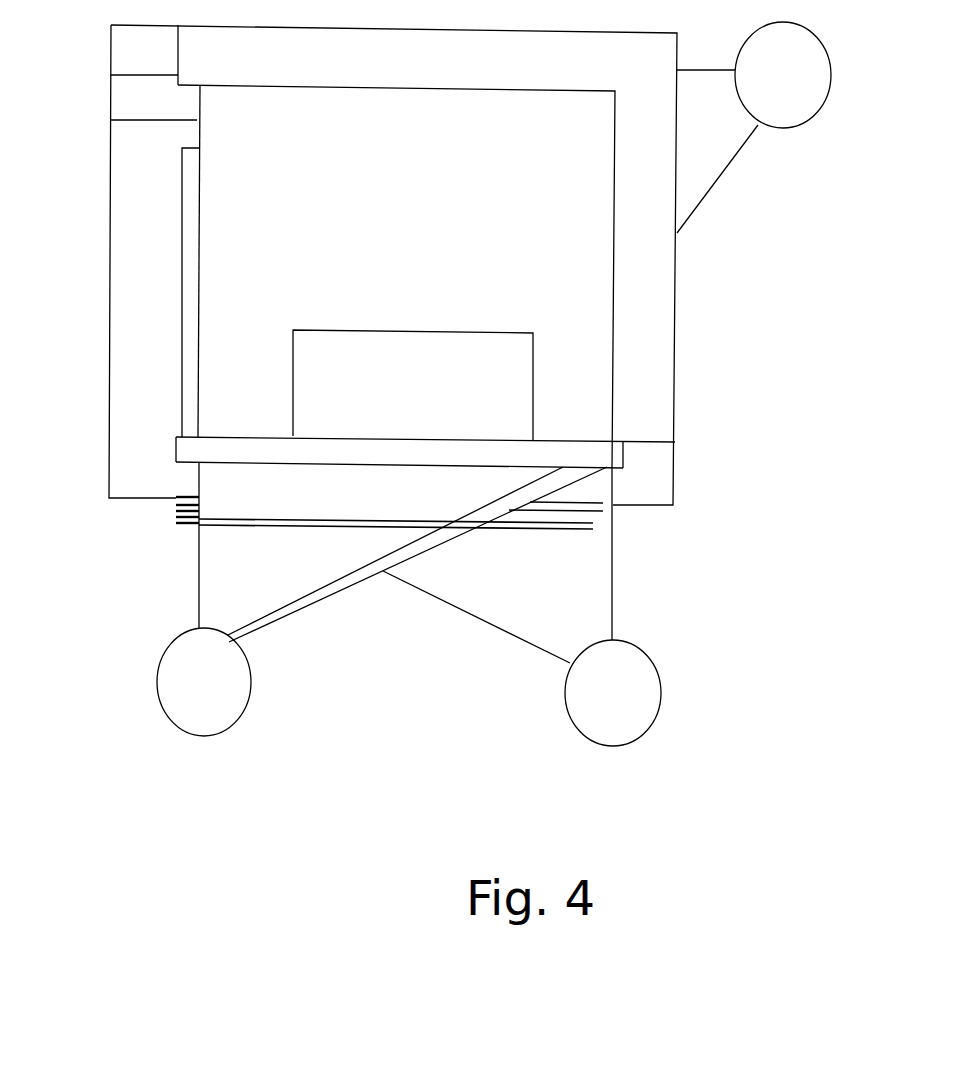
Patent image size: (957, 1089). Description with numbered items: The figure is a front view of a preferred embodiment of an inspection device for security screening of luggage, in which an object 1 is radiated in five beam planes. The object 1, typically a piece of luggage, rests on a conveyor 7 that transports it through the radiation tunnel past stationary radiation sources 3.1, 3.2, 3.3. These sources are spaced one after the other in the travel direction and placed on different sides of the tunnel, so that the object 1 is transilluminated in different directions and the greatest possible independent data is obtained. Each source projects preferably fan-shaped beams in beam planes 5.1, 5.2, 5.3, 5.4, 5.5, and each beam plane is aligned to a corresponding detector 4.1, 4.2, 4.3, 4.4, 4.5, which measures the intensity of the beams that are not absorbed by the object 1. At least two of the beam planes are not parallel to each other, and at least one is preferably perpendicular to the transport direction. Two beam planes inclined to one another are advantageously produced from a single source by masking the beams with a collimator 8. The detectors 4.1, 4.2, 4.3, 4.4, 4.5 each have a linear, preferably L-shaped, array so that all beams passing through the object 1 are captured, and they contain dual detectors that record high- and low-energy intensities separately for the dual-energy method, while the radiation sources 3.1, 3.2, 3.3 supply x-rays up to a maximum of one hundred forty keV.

The object 1 is at (413, 385).
The radiation source 3.1 is at (238, 703).
The radiation source 3.2 is at (578, 718).
The radiation source 3.3 is at (791, 98).
The detector 4.1 is at (663, 367).
The detector 4.2 is at (675, 320).
The detector 4.3 is at (121, 57).
The detector 4.4 is at (118, 106).
The detector 4.5 is at (127, 370).
The beam plane 5.1 is at (280, 620).
The beam plane 5.2 is at (303, 585).
The beam plane 5.3 is at (583, 595).
The beam plane 5.4 is at (612, 618).
The beam plane 5.5 is at (705, 157).
The conveyor 7 is at (597, 459).
The collimator 8 is at (173, 507).